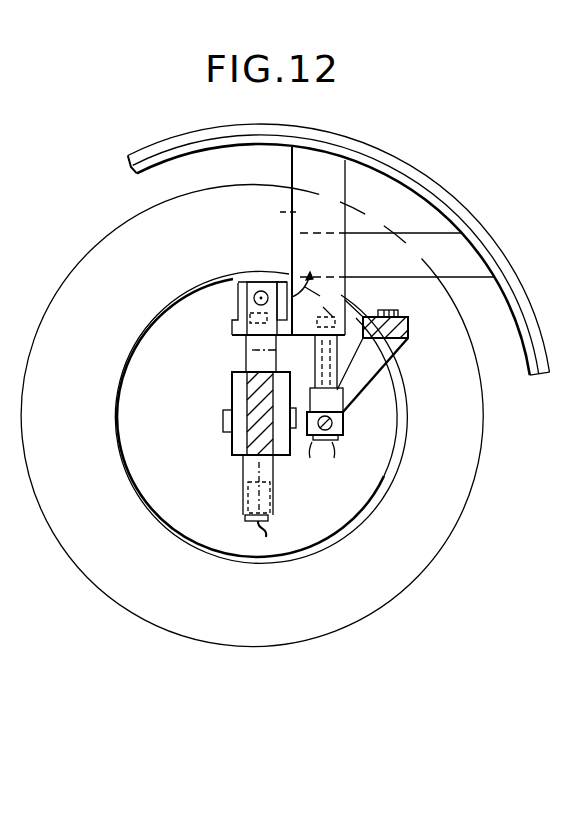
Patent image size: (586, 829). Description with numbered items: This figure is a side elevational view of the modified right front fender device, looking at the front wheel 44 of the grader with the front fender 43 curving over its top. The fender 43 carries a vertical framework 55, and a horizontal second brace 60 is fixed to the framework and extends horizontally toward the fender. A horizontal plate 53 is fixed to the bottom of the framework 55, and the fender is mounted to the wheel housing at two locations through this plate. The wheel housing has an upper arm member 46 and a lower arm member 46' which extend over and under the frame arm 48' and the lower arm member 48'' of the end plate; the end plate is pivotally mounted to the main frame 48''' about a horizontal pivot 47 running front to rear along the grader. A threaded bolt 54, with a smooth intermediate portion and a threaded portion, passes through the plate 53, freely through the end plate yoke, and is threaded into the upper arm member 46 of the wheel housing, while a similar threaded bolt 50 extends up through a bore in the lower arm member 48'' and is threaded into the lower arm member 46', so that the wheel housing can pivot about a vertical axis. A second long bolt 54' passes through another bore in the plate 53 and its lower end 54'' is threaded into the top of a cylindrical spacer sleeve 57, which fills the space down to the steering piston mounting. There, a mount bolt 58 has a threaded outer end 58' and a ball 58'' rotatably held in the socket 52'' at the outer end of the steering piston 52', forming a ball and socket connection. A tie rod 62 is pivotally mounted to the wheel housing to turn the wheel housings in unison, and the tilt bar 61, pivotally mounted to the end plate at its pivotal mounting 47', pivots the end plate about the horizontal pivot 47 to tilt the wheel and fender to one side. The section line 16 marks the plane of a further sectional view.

The section line 16 is at (292, 88).
The front fender 43 is at (522, 269).
The front wheel 44 is at (475, 512).
The upper arm member 46 is at (233, 408).
The lower arm member 46' is at (224, 485).
The horizontal pivot 47 is at (187, 454).
The pivotal mounting 47' is at (288, 241).
The frame arm 48' is at (221, 353).
The lower arm member of end plate 48'' is at (227, 507).
The main frame 48''' is at (186, 422).
The threaded bolt 50 is at (282, 532).
The piston 52' is at (337, 465).
The socket 52'' is at (308, 460).
The horizontal plate 53 is at (226, 321).
The threaded bolt 54 is at (261, 403).
The second long bolt 54' is at (344, 301).
The lower end of second long bolt 54'' is at (381, 356).
The vertical framework 55 is at (293, 209).
The spacer sleeve 57 is at (352, 425).
The mount bolt 58 is at (367, 453).
The threaded outer end 58' is at (376, 401).
The ball 58'' is at (380, 445).
The horizontal second brace 60 is at (360, 240).
The tilt bar 61 is at (261, 290).
The tie rod 62 is at (408, 328).